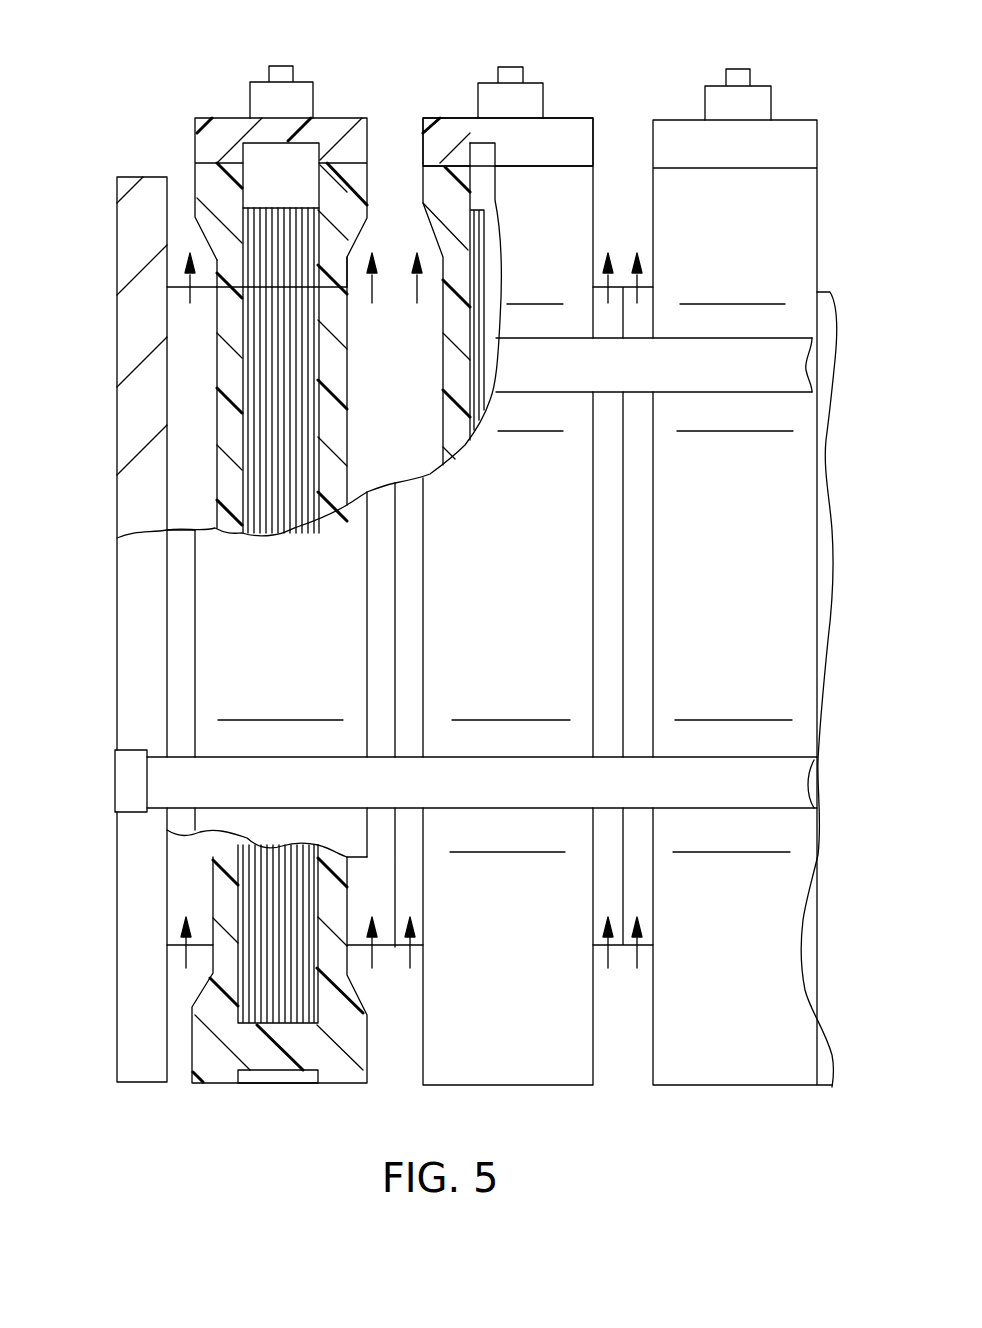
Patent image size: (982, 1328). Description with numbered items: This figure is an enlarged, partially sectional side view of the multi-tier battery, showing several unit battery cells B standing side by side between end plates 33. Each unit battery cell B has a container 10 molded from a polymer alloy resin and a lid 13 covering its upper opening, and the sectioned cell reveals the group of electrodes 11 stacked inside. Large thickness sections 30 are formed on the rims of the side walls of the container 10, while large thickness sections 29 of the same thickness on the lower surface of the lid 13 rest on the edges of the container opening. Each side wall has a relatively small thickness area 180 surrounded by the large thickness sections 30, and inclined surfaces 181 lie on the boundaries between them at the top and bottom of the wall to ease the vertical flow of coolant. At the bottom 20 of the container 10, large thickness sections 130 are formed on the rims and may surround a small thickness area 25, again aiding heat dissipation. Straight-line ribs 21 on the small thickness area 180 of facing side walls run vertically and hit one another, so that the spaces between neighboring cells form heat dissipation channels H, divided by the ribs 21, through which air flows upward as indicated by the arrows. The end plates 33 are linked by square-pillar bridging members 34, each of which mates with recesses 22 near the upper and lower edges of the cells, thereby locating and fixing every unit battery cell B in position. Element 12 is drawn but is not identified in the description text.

The container 10 is at (464, 118).
The lid 13 is at (233, 118).
The large thickness sections 30 is at (210, 182).
The inclined surfaces 181 is at (202, 242).
The large thickness sections of lid 29 is at (313, 153).
The end plates 33 is at (127, 277).
The straight-line ribs 21 is at (180, 317).
The housing wall 12 is at (225, 368).
The group of electrodes 11 is at (247, 447).
The small thickness area 180 is at (215, 477).
The bridging members 34 is at (767, 355).
The recesses 22 is at (803, 392).
The bottom 20 is at (340, 1085).
The small thickness area of bottom 25 is at (283, 1073).
The large thickness sections of bottom 130 is at (212, 1073).
The heat dissipation channels H is at (177, 247).
The unit battery cell B is at (325, 80).